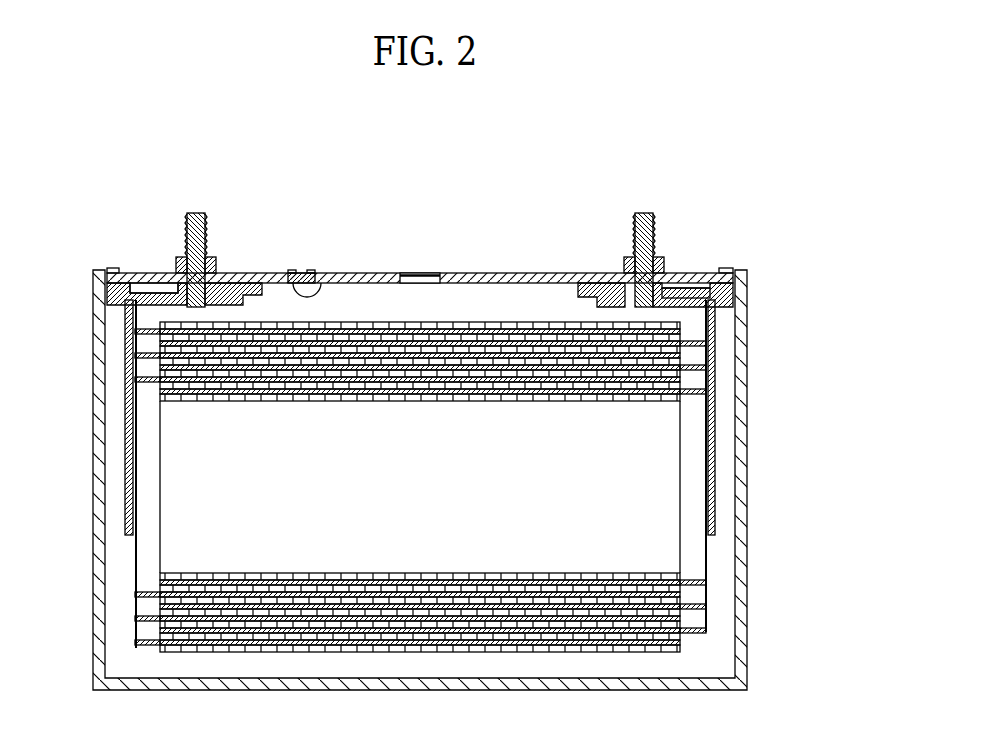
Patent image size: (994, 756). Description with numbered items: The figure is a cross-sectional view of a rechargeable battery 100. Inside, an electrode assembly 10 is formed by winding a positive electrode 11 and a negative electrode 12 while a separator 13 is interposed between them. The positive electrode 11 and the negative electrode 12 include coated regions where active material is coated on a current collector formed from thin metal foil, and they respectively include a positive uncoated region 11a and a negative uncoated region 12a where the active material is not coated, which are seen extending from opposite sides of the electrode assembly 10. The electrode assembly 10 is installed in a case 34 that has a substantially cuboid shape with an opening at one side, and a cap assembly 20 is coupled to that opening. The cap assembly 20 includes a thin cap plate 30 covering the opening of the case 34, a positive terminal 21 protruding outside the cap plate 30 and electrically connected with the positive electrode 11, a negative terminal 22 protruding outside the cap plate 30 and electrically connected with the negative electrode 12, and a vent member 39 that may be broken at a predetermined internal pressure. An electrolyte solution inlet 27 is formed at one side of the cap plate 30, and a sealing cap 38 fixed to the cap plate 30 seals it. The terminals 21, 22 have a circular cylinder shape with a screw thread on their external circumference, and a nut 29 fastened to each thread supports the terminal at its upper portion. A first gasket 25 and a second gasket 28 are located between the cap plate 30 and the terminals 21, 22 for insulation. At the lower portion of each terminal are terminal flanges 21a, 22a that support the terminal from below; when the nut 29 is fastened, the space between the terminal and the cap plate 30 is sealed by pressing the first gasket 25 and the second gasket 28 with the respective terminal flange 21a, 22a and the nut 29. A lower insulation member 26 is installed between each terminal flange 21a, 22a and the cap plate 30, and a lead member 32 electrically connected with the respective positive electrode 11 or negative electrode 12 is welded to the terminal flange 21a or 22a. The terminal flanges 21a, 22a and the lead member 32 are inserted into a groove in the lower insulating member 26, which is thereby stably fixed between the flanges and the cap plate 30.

The rechargeable battery 100 is at (402, 158).
The electrode assembly 10 is at (532, 545).
The positive electrode 11 is at (256, 650).
The positive uncoated region 11a is at (142, 650).
The negative electrode 12 is at (303, 650).
The negative uncoated region 12a is at (695, 634).
The separator 13 is at (423, 624).
The cap assembly 20 is at (261, 269).
The positive terminal 21 is at (206, 222).
The terminal flange 21a is at (182, 290).
The negative terminal 22 is at (634, 225).
The terminal flange 22a is at (712, 330).
The first gasket 25 is at (668, 282).
The lower insulation member 26 is at (113, 292).
The electrolyte solution inlet 27 is at (318, 294).
The second gasket 28 is at (684, 272).
The nut 29 is at (182, 263).
The cap plate 30 is at (487, 274).
The lead member 32 is at (127, 460).
The case 34 is at (742, 418).
The sealing cap 38 is at (291, 272).
The vent member 39 is at (405, 273).